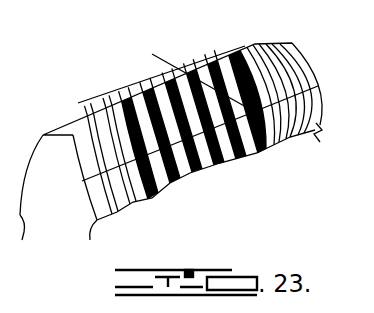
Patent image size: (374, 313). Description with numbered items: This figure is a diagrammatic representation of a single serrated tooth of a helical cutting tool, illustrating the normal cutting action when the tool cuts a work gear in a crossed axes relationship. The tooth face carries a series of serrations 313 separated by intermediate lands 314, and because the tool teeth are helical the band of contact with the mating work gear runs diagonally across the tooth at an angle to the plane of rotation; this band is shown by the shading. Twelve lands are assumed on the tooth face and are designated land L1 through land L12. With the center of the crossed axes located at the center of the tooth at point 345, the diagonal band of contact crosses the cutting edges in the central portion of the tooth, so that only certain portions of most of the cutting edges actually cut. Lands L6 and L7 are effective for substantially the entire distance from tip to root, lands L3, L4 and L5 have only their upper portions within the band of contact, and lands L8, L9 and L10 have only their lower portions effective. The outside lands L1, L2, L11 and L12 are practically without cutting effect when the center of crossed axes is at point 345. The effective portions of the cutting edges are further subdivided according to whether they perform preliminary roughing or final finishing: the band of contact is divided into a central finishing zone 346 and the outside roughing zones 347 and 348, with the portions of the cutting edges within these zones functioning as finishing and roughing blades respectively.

The serrations 313 is at (282, 62).
The intermediate lands 314 is at (284, 97).
The center of crossed axes 345 is at (204, 78).
The finishing zone 346 is at (125, 93).
The roughing zone 347 is at (95, 105).
The roughing zone 348 is at (150, 72).
The land L1 is at (97, 221).
The land L2 is at (117, 203).
The land L3 is at (150, 190).
The land L4 is at (170, 185).
The land L5 is at (180, 178).
The land L6 is at (203, 170).
The land L7 is at (225, 165).
The land L8 is at (258, 147).
The land L9 is at (270, 137).
The land L10 is at (277, 138).
The land L11 is at (290, 138).
The land L12 is at (320, 133).